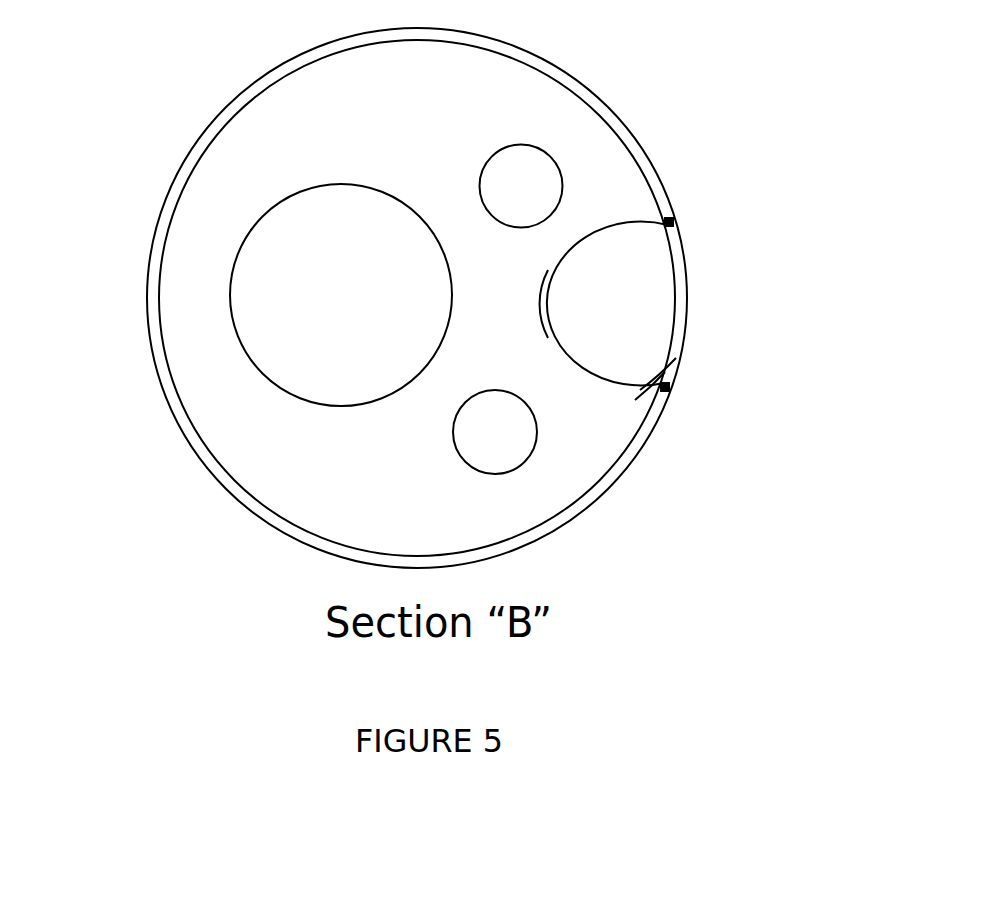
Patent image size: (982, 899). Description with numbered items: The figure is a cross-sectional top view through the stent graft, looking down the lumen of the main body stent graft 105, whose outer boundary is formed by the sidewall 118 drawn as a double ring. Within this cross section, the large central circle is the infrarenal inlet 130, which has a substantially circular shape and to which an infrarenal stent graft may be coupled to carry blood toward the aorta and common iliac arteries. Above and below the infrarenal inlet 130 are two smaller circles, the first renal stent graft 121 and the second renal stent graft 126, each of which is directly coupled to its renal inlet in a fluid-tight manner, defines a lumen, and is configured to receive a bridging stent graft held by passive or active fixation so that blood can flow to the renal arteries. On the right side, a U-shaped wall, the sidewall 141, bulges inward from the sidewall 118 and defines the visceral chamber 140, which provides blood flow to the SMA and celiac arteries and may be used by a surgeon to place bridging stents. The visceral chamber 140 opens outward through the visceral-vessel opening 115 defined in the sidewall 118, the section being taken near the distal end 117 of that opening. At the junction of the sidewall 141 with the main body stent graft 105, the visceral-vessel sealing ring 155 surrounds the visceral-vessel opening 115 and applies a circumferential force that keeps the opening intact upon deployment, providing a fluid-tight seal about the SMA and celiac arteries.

The main body stent graft 105 is at (155, 414).
The sidewall 118 is at (223, 477).
The infrarenal inlet 130 is at (232, 267).
The first renal stent graft 121 is at (561, 173).
The second renal stent graft 126 is at (536, 449).
The visceral chamber 140 is at (656, 272).
The sidewall 141 is at (549, 285).
The visceral-vessel sealing ring 155 is at (672, 222).
The visceral-vessel opening 115 is at (670, 362).
The distal end of the visceral-vessel opening 117 is at (718, 400).